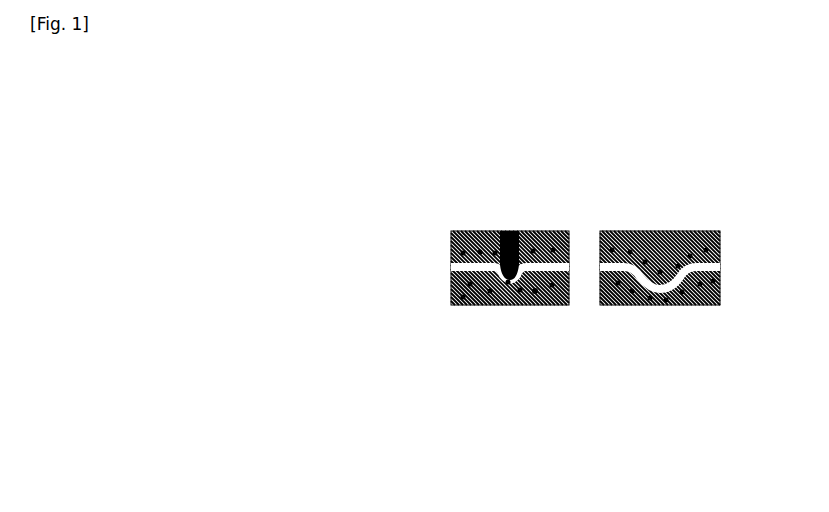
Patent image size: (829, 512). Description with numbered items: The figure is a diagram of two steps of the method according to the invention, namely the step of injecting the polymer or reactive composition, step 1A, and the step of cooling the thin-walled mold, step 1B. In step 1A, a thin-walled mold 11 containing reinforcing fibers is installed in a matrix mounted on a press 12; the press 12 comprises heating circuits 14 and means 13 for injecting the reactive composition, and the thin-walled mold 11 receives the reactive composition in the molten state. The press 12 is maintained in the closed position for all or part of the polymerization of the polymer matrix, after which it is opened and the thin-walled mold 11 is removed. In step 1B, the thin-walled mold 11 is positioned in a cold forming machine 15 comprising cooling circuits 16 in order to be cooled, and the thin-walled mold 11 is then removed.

The thin-walled mold 11 is at (536, 292).
The press 12 is at (457, 224).
The means for injecting the reactive composition 13 is at (509, 224).
The heating circuits 14 is at (541, 231).
The cold forming machine 15 is at (636, 224).
The cooling circuits 16 is at (685, 232).
The step of injecting the polymer or the reactive composition 1A is at (519, 388).
The step of cooling the thin-walled mold 1B is at (664, 388).